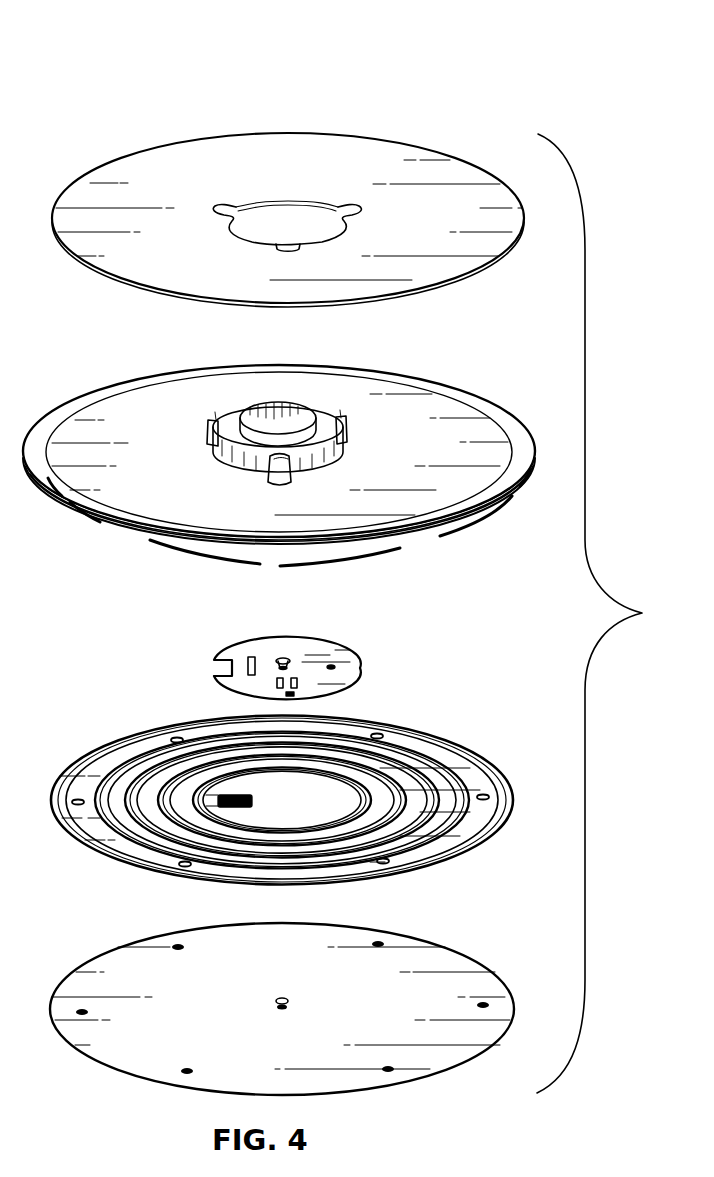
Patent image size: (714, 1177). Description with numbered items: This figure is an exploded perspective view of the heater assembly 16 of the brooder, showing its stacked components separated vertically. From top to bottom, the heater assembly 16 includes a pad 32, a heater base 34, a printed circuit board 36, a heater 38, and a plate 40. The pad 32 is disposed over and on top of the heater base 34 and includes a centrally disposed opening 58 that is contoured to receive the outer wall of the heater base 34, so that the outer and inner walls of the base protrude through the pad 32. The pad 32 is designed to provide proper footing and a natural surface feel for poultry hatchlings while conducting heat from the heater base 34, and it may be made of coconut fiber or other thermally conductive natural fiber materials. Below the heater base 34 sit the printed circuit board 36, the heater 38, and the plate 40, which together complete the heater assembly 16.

The heater assembly 16 is at (110, 46).
The pad 32 is at (177, 150).
The centrally disposed opening 58 is at (311, 215).
The heater base 34 is at (138, 400).
The printed circuit board 36 is at (242, 655).
The heater 38 is at (123, 753).
The plate 40 is at (120, 960).